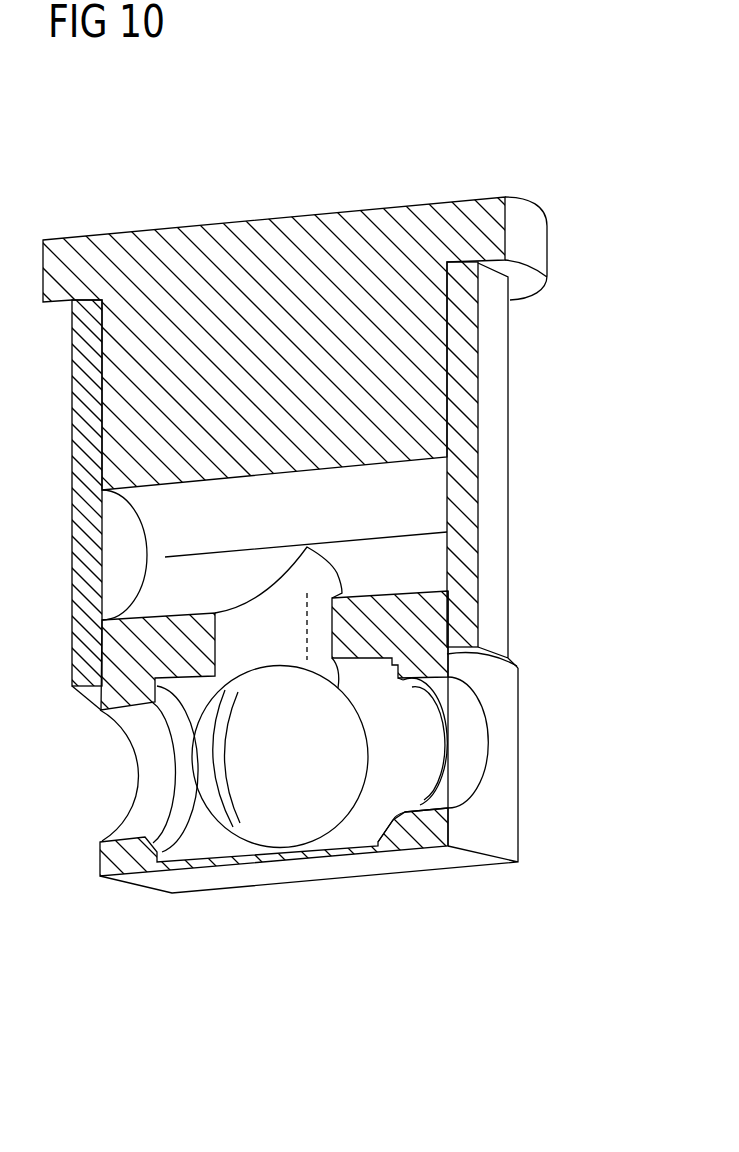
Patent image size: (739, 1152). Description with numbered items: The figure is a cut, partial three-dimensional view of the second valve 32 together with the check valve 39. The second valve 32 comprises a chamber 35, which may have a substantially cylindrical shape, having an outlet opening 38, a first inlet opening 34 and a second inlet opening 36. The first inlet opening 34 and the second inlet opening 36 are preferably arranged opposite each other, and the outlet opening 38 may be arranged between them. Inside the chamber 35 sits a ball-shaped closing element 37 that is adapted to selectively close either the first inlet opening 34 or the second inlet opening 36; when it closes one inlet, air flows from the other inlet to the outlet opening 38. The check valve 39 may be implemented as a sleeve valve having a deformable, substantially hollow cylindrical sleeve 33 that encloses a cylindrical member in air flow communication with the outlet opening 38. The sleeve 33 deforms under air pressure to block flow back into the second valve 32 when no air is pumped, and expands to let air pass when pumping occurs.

The check valve 39 is at (522, 356).
The sleeve 33 is at (458, 460).
The second valve 32 is at (545, 675).
The outlet opening 38 is at (313, 645).
The first inlet opening 34 is at (453, 755).
The second inlet opening 36 is at (160, 762).
The ball-shaped closing element 37 is at (262, 777).
The chamber 35 is at (365, 827).